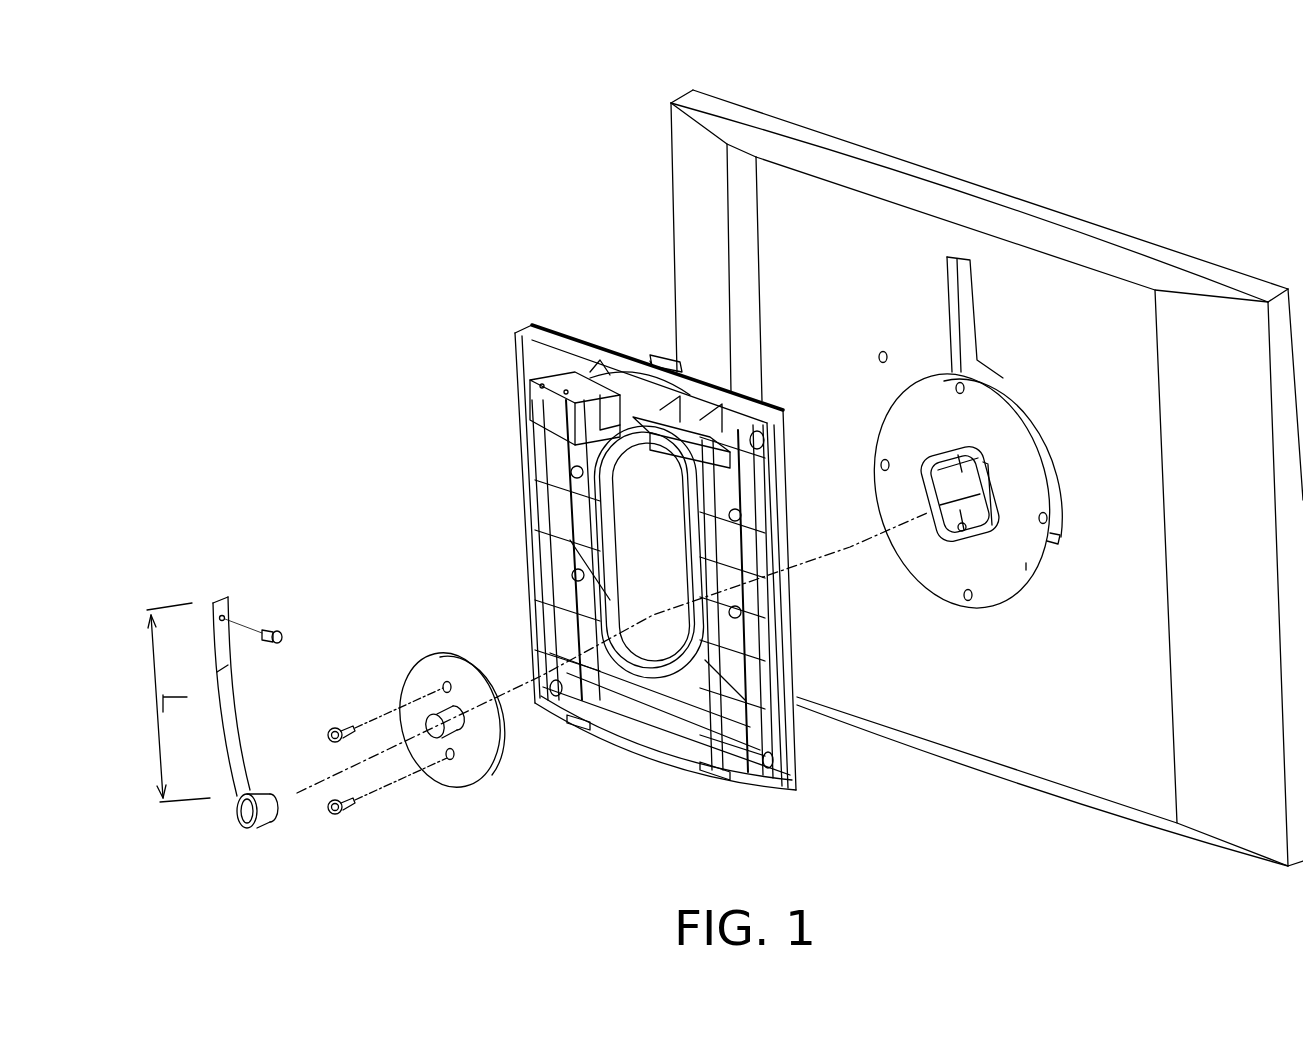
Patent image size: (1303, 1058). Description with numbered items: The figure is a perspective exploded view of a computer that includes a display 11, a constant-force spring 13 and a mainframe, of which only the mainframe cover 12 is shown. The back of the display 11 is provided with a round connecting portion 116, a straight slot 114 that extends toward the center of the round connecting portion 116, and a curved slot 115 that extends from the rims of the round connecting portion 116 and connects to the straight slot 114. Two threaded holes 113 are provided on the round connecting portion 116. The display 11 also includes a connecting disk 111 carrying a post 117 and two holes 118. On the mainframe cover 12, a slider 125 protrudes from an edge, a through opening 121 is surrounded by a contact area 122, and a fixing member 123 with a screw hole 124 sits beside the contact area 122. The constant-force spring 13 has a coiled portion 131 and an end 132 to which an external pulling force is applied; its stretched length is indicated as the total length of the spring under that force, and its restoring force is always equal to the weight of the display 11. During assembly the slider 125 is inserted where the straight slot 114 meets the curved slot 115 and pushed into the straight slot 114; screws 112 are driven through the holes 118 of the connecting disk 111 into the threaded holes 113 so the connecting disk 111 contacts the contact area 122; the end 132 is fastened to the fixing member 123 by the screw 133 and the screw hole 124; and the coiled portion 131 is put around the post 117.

The display 11 is at (1093, 185).
The mainframe cover 12 is at (662, 778).
The constant-force spring 13 is at (253, 707).
The connecting disk 111 is at (442, 772).
The screws 112 is at (343, 727).
The threaded holes 113 is at (950, 450).
The straight slot 114 is at (965, 290).
The curved slot 115 is at (1002, 380).
The round connecting portion 116 is at (1026, 563).
The post 117 is at (451, 712).
The holes 118 is at (445, 685).
The through opening 121 is at (657, 545).
The contact area 122 is at (615, 508).
The fixing member 123 is at (586, 425).
The screw hole 124 is at (610, 418).
The slider 125 is at (657, 357).
The coiled portion 131 is at (268, 808).
The end 132 is at (222, 597).
The screw 133 is at (273, 632).